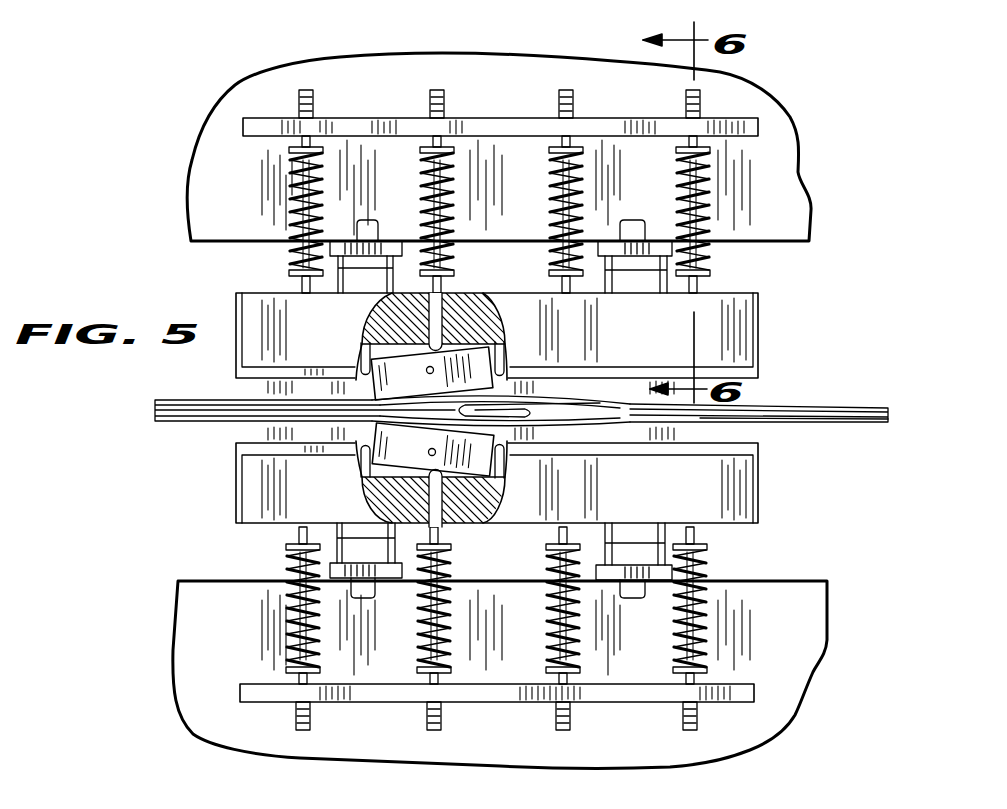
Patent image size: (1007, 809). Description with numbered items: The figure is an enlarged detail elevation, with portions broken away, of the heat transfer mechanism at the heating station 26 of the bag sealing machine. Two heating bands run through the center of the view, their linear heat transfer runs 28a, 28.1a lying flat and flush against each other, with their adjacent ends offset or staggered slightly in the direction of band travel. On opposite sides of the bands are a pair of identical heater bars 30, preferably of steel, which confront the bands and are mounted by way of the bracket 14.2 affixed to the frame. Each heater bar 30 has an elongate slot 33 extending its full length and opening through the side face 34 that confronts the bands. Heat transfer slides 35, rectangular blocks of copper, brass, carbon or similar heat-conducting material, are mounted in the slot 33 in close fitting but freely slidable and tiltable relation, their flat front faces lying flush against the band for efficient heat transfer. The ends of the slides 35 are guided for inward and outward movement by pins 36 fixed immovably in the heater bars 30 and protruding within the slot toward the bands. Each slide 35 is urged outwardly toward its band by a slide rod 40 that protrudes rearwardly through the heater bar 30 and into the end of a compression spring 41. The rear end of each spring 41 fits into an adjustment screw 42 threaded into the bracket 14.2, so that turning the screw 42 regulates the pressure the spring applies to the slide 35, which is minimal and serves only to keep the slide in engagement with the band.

The bracket 14.2 is at (468, 117).
The heating station 26 is at (806, 143).
The heat transfer run 28a is at (798, 405).
The heat transfer run 28.1a is at (804, 424).
The heater bar 30 is at (746, 333).
The slot 33 is at (390, 347).
The side face 34 is at (605, 372).
The heat transfer slide 35 is at (417, 389).
The pin 36 is at (507, 358).
The slide rod 40 is at (560, 284).
The compression spring 41 is at (579, 190).
The adjustment screw 42 is at (575, 108).